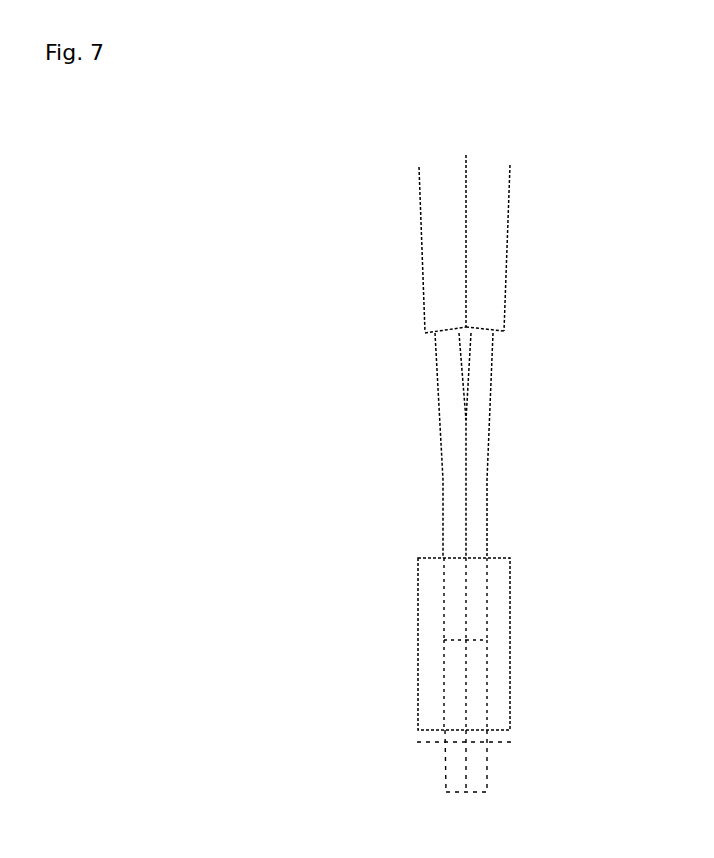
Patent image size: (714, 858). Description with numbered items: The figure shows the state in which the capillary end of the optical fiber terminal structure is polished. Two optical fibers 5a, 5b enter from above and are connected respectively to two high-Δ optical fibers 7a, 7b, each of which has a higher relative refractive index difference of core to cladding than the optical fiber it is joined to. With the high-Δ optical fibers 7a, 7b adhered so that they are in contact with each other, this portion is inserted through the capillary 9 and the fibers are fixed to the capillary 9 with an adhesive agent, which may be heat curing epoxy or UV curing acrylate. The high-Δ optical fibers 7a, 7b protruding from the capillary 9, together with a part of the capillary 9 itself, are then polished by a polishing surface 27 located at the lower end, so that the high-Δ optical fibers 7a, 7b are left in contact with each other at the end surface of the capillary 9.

The optical fiber 5a is at (482, 428).
The optical fiber 5b is at (445, 467).
The capillary 9 is at (510, 620).
The high-Δ optical fiber 7a is at (482, 683).
The high-Δ optical fiber 7b is at (457, 700).
The polishing surface 27 is at (497, 738).